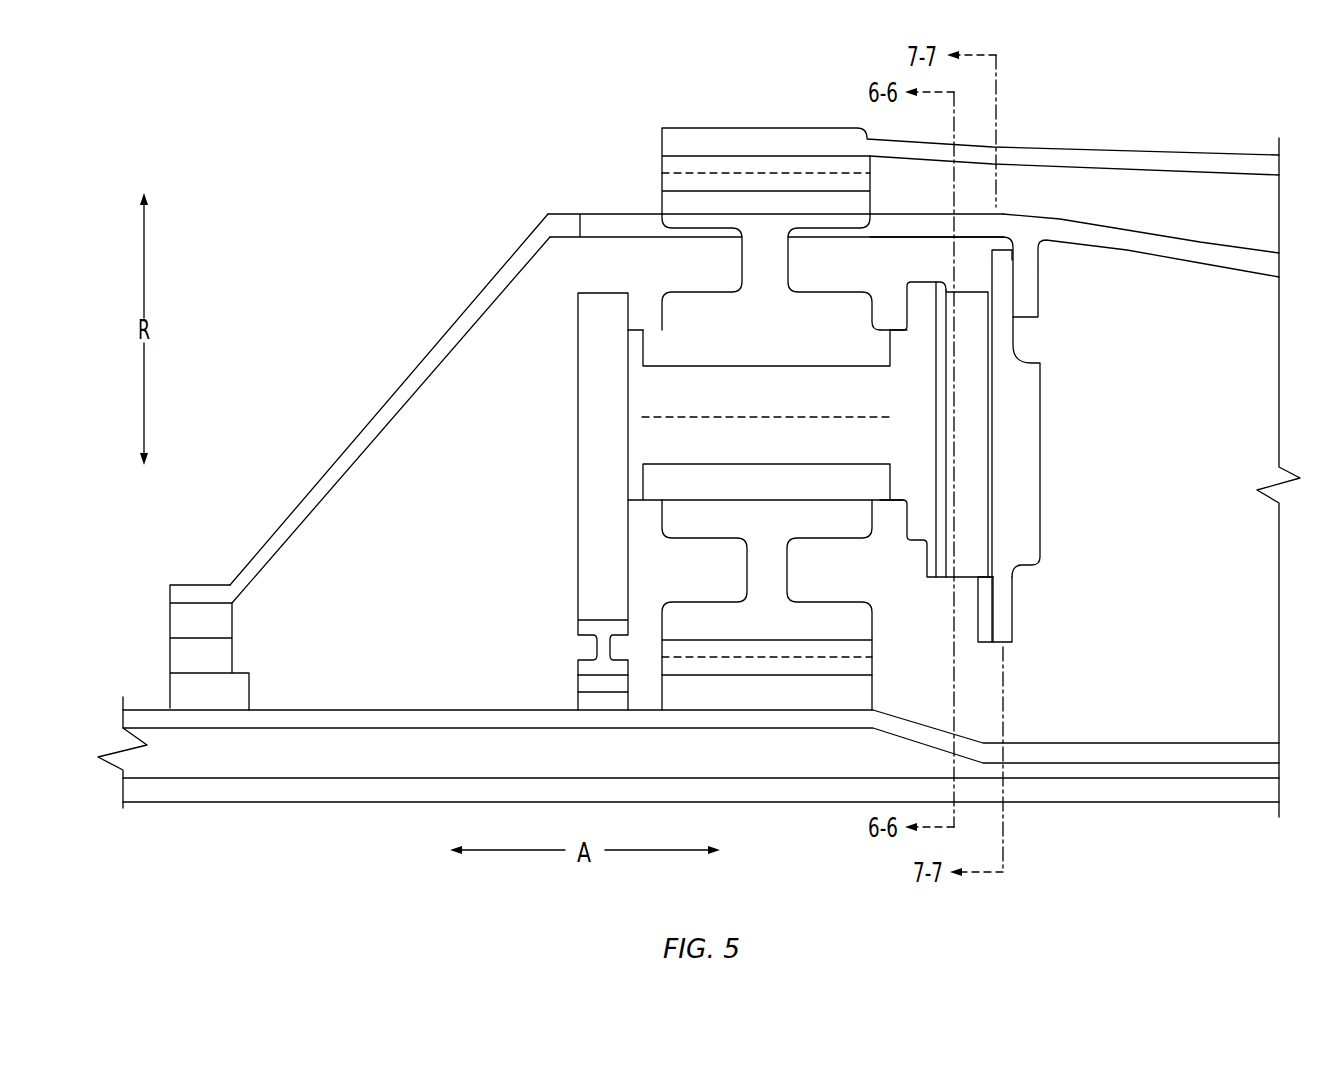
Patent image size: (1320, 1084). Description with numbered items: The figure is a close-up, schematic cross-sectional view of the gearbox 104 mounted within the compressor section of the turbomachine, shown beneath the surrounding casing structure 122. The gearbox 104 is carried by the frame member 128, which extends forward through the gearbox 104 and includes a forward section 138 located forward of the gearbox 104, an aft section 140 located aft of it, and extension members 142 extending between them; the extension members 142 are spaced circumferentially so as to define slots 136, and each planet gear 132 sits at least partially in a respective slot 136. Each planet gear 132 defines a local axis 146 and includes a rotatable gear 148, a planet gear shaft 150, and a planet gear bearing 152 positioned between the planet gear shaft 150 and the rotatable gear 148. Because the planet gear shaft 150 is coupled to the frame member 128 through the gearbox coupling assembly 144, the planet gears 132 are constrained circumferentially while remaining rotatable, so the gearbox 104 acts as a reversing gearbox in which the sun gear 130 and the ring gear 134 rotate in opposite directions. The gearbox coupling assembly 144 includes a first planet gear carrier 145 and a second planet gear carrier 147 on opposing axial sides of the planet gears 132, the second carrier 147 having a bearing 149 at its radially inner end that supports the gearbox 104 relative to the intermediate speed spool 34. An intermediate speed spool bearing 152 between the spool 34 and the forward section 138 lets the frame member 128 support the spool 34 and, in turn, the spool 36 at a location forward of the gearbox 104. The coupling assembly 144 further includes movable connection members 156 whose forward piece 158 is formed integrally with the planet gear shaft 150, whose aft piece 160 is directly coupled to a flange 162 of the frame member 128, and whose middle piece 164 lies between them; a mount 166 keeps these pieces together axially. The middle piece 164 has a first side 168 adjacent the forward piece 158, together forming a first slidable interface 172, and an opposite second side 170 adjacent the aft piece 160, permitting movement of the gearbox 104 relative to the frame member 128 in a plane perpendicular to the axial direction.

The gearbox 104 is at (566, 103).
The outer casing 122 is at (1025, 157).
The frame member 128 is at (1141, 210).
The sun gear 130 is at (822, 700).
The planet gear 132 is at (588, 261).
The ring gear 134 is at (755, 167).
The slot 136 is at (925, 198).
The forward section 138 is at (395, 392).
The aft section 140 is at (1227, 253).
The extension member 142 is at (905, 217).
The gearbox coupling assembly 144 is at (1102, 409).
The first planet gear carrier 145 is at (922, 307).
The local axis 146 is at (693, 418).
The second planet gear carrier 147 is at (598, 535).
The rotatable gear 148 is at (760, 565).
The bearing 149 is at (564, 677).
The planet gear shaft 150 is at (667, 402).
The planet gear bearing 152 is at (232, 628).
The movable connection member 156 is at (1102, 515).
The forward piece 158 is at (893, 286).
The aft piece 160 is at (1025, 390).
The flange 162 is at (1025, 273).
The middle piece 164 is at (975, 547).
The mount 166 is at (988, 613).
The first side 168 is at (934, 393).
The second side 170 is at (1007, 528).
The first slidable interface 172 is at (930, 499).
The intermediate speed spool 34 is at (367, 710).
The intermediate speed spool 36 is at (367, 788).